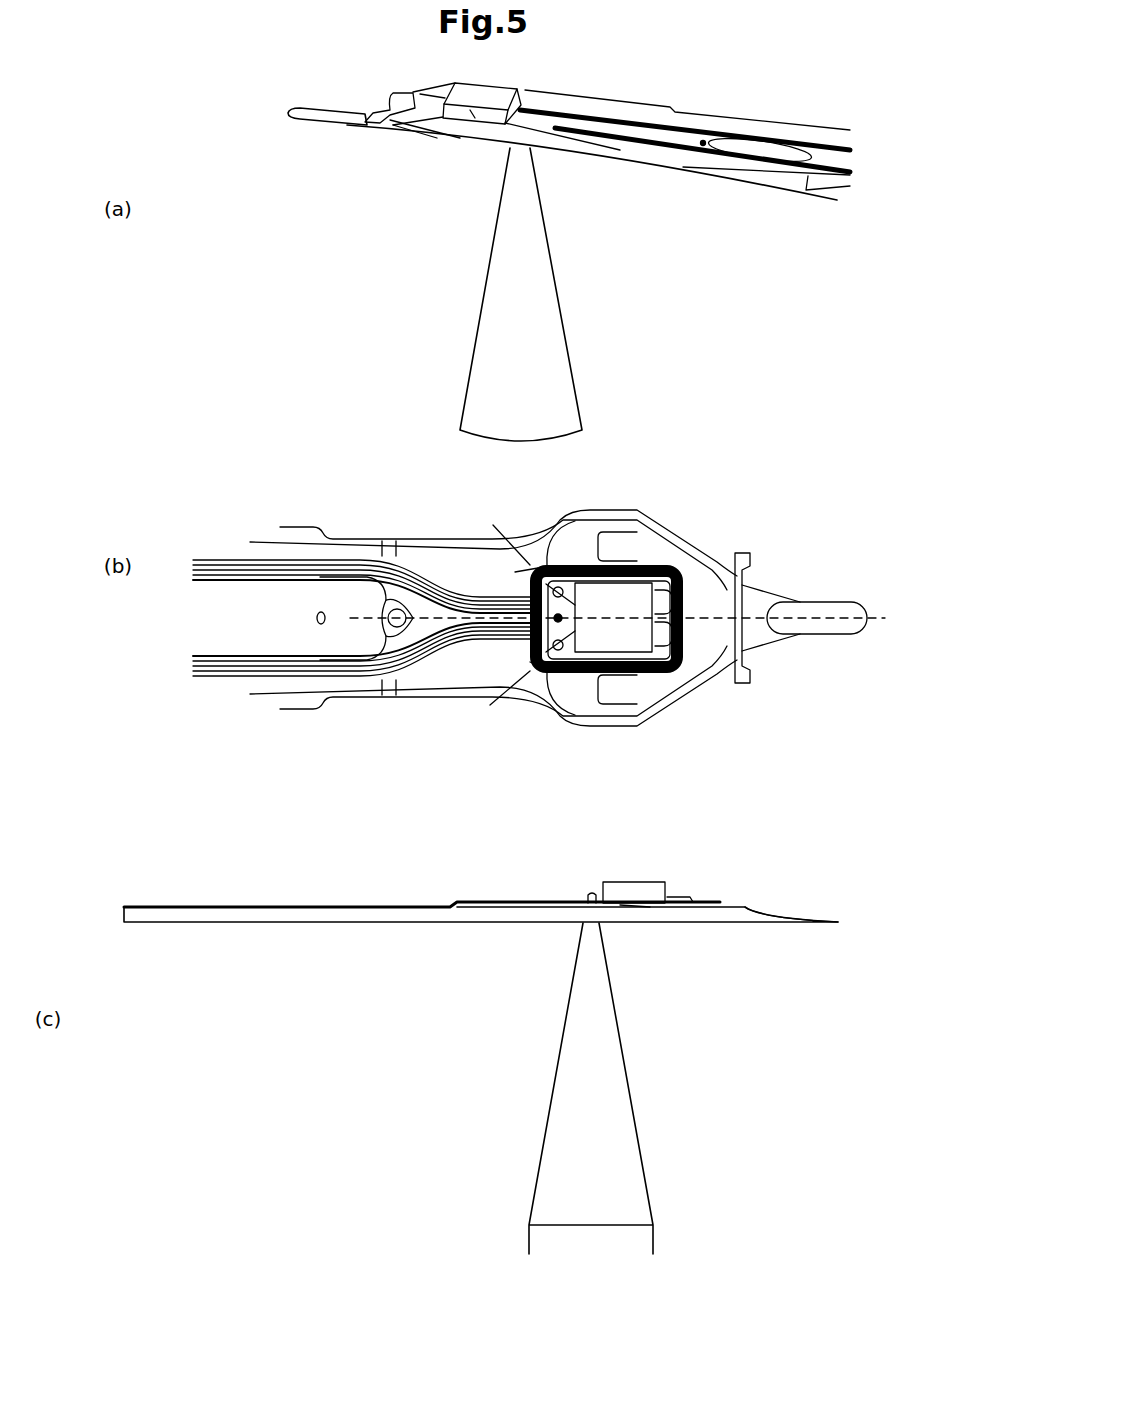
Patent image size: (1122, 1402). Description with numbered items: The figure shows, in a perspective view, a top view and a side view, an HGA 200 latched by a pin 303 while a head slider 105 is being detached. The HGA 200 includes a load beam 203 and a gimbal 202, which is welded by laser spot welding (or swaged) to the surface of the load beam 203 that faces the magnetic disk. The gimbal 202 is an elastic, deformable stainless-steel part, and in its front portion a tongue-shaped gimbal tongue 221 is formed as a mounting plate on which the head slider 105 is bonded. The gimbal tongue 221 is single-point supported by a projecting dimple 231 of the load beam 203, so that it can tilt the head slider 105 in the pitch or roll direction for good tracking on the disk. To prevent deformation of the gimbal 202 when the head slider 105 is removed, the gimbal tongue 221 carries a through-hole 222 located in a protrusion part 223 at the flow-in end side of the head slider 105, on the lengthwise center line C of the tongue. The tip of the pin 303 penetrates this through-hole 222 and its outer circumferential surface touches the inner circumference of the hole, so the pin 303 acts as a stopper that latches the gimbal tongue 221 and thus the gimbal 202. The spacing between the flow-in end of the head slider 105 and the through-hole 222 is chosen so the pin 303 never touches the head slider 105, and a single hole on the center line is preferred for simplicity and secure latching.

The head slider 105 is at (462, 142).
The HGA 200 is at (380, 137).
The gimbal 202 is at (513, 900).
The load beam 203 is at (793, 917).
The gimbal tongue 221 is at (552, 572).
The through-hole 222 is at (530, 662).
The protrusion part 223 is at (515, 572).
The dimple 231 is at (640, 905).
The pin 303 is at (565, 333).